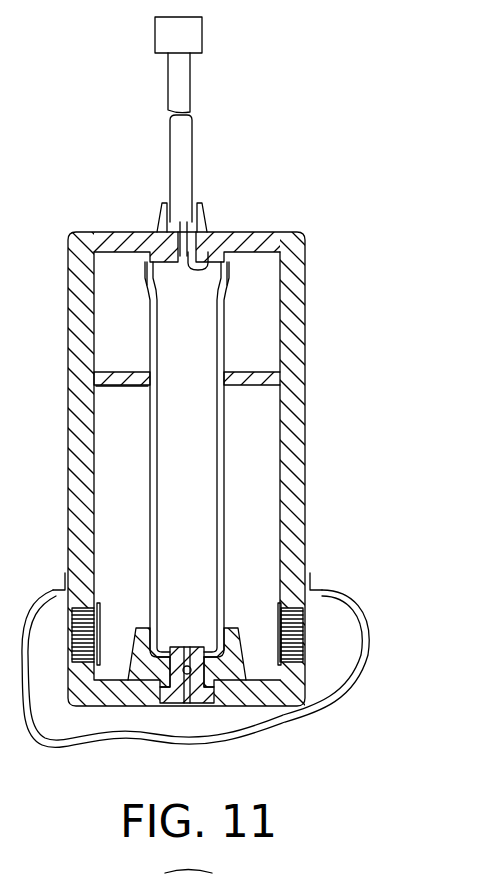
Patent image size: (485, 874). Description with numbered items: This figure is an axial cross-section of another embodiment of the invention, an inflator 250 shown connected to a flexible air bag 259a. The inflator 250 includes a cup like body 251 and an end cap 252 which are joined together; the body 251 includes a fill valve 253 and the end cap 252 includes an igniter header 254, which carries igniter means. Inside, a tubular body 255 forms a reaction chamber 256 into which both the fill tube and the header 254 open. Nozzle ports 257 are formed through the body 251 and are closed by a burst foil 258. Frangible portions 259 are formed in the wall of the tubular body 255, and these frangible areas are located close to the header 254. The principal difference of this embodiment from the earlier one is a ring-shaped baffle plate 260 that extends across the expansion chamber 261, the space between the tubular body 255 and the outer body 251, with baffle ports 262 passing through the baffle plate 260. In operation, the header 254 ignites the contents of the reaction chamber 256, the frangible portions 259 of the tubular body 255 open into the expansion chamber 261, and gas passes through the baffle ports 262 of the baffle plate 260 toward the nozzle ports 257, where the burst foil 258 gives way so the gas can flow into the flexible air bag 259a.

The inflator 250 is at (324, 391).
The cup like body 251 is at (305, 329).
The end cap 252 is at (248, 231).
The fill valve 253 is at (187, 703).
The igniter header 254 is at (194, 201).
The tubular body 255 is at (150, 447).
The reaction chamber 256 is at (208, 553).
The nozzle ports 257 is at (305, 625).
The burst foil 258 is at (269, 596).
The frangible portions 259 is at (147, 288).
The flexible air bag 259a is at (364, 618).
The ring-shaped baffle plate 260 is at (103, 371).
The expansion chamber 261 is at (117, 512).
The baffle ports 262 is at (121, 386).